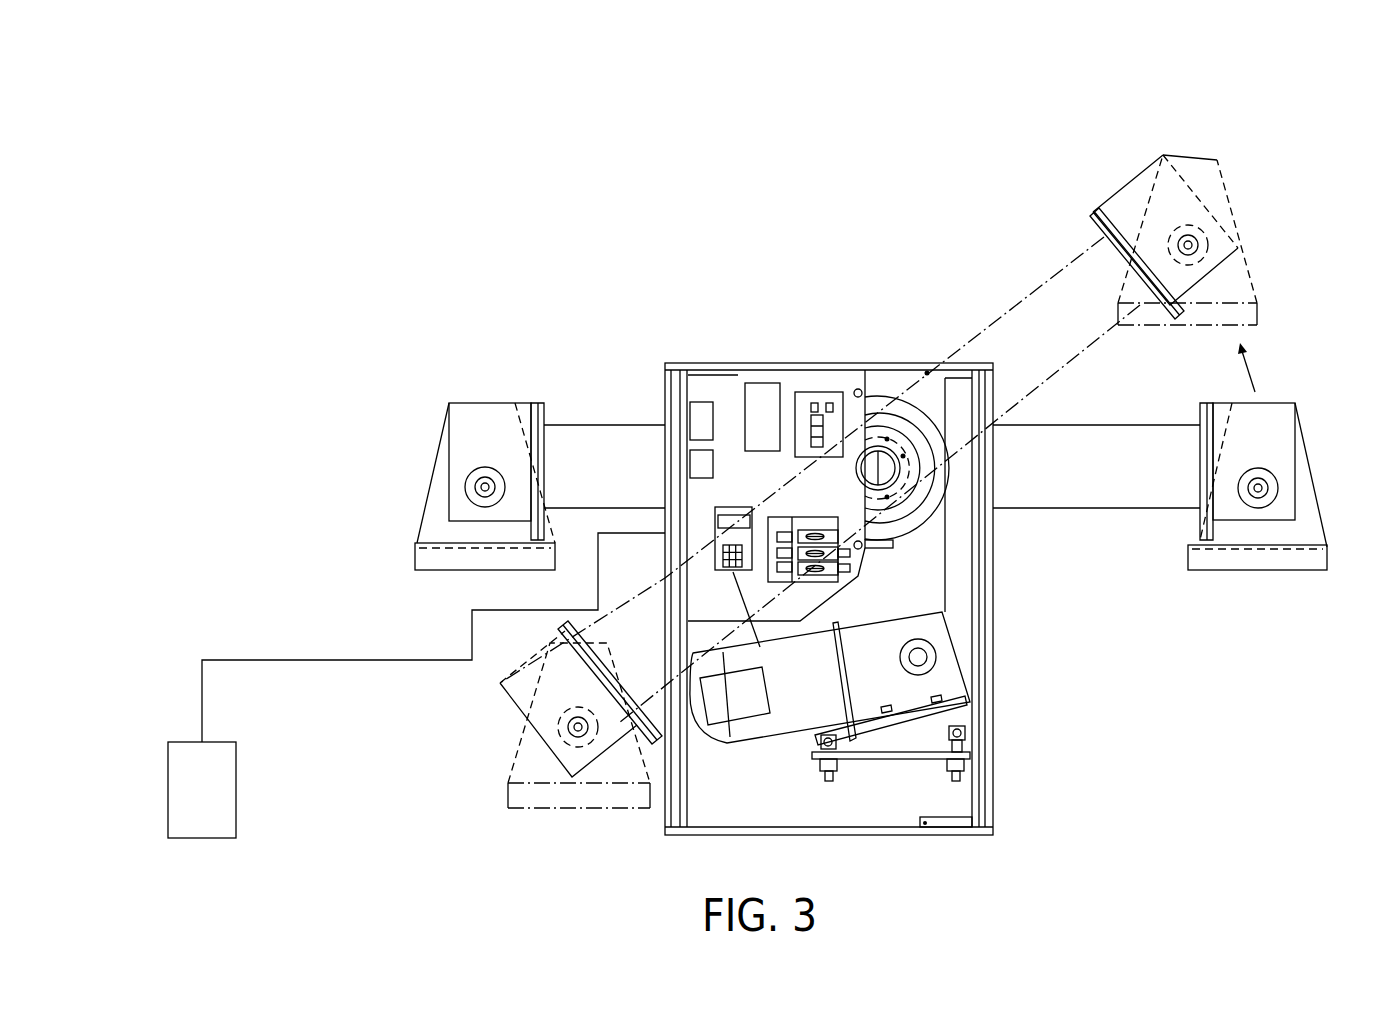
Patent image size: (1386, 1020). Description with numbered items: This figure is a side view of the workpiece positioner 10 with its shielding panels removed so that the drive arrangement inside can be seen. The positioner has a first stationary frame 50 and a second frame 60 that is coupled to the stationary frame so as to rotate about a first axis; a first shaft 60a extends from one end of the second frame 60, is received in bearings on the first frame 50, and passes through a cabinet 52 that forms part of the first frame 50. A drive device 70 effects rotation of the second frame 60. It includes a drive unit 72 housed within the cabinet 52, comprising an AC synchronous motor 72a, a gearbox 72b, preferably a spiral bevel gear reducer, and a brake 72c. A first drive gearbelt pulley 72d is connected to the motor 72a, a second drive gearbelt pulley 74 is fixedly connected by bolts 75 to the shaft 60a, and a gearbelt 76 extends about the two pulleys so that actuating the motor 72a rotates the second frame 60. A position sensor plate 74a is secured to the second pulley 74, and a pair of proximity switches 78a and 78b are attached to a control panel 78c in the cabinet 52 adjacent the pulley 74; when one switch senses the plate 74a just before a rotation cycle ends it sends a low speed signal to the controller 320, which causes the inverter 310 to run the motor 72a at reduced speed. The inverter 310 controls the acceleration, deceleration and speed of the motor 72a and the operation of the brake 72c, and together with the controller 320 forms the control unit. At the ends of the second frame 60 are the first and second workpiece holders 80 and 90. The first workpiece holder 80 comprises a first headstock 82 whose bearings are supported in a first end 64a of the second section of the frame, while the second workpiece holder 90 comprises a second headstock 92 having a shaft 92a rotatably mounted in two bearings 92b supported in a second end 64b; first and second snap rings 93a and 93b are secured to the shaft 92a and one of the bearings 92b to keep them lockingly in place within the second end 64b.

The workpiece positioner 10 is at (1237, 147).
The first stationary frame 50 is at (990, 768).
The cabinet 52 is at (990, 730).
The second frame 60 is at (1118, 426).
The first shaft 60a is at (867, 493).
The first end of the second section 64a is at (1287, 413).
The second end of the second section 64b is at (460, 453).
The drive device 70 is at (889, 352).
The drive unit 72 is at (777, 778).
The AC synchronous motor 72a is at (833, 693).
The gearbox 72b is at (950, 686).
The brake 72c is at (717, 715).
The first drive gearbelt pulley 72d is at (936, 658).
The second drive gearbelt pulley 74 is at (935, 507).
The position sensor plate 74a is at (868, 548).
The bolts 75 is at (889, 437).
The gearbelt 76 is at (948, 568).
The proximity switch 78a is at (848, 578).
The proximity switch 78b is at (858, 388).
The control panel 78c is at (747, 378).
The first workpiece holder 80 is at (1313, 536).
The first headstock 82 is at (1307, 503).
The second workpiece holder 90 is at (433, 537).
The second headstock 92 is at (432, 507).
The shaft 92a is at (497, 480).
The bearings 92b is at (493, 471).
The first snap ring 93a is at (570, 726).
The second snap ring 93b is at (578, 747).
The inverter 310 is at (716, 572).
The controller 320 is at (200, 828).